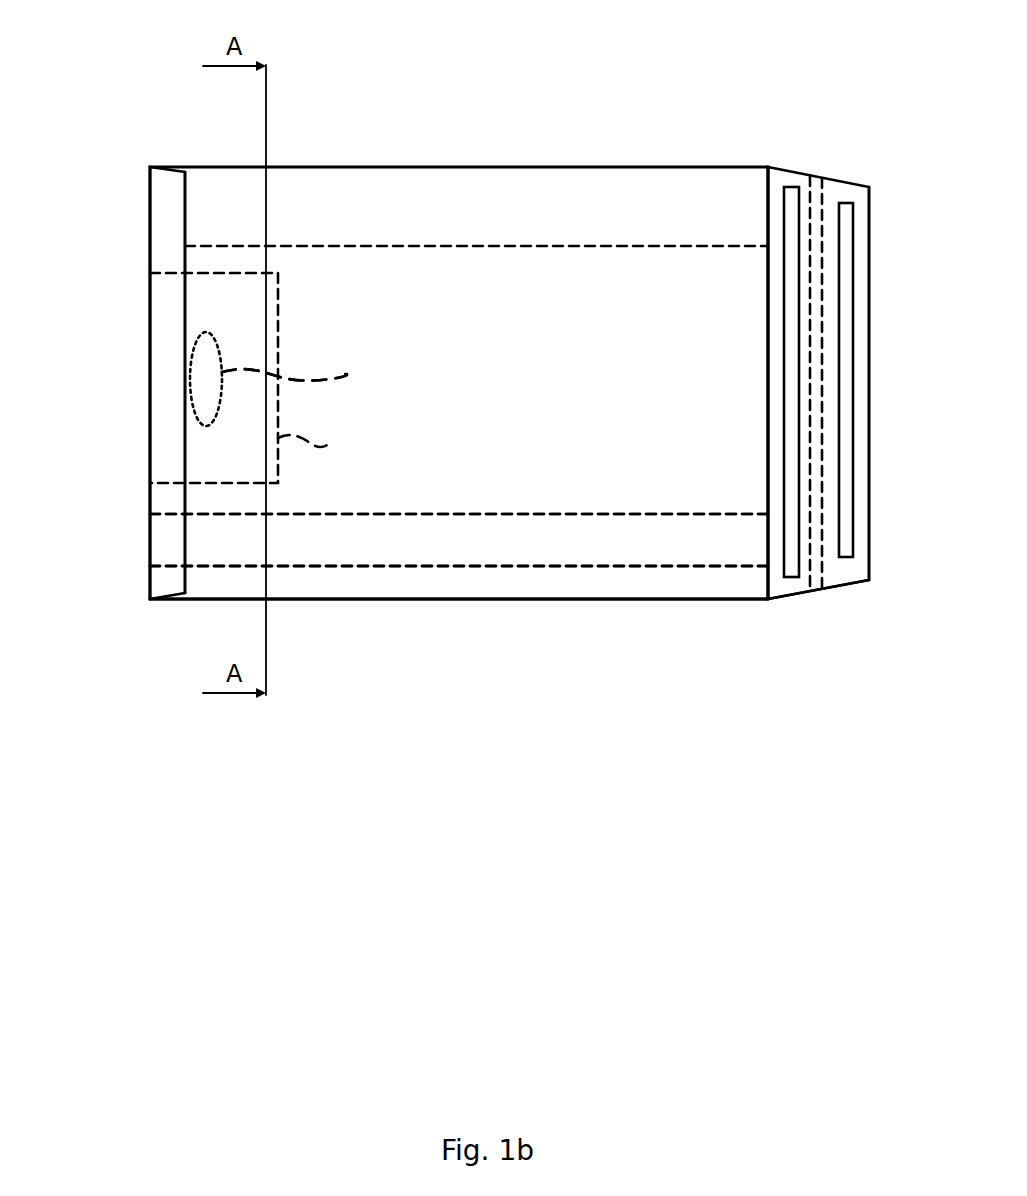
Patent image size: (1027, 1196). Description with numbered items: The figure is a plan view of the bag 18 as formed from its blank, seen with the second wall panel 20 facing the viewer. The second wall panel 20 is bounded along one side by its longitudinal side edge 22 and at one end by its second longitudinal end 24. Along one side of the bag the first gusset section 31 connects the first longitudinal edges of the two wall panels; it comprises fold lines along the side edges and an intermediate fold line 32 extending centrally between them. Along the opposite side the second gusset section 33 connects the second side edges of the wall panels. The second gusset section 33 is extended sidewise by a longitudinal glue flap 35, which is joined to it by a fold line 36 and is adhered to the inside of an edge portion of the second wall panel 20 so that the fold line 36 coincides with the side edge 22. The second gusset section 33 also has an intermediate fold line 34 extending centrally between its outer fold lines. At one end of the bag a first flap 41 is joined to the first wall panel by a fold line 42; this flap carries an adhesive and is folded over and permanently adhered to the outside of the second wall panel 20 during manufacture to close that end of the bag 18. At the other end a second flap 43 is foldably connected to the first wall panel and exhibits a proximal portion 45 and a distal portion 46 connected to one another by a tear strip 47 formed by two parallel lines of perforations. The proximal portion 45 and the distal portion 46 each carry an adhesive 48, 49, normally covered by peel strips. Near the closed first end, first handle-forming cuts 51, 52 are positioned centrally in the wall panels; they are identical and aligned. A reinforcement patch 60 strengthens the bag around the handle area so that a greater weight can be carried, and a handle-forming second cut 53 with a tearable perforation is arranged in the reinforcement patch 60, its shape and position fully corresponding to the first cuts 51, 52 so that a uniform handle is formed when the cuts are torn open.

The package blank 18 is at (548, 138).
The second wall panel 20 is at (388, 167).
The longitudinal side edge 22 is at (380, 600).
The second longitudinal end 24 is at (772, 176).
The first gusset section 31 is at (132, 229).
The upper fold line 32 is at (473, 246).
The second gusset section 33 is at (122, 550).
The intermediate fold line 34 is at (572, 514).
The longitudinal glue flap 35 is at (500, 586).
The fold line 36 is at (548, 566).
The first flap 41 is at (173, 194).
The fold line 42 is at (150, 432).
The second flap 43 is at (838, 592).
The proximal portion 45 is at (787, 598).
The distal portion 46 is at (858, 583).
The tear strip 47 is at (820, 192).
The adhesive 48 is at (800, 180).
The adhesive 49 is at (851, 199).
The first handle-forming cut 51 is at (318, 364).
The first handle-forming cut 52 is at (210, 332).
The handle-forming second cut 53 is at (284, 375).
The reinforcement patch 60 is at (321, 434).